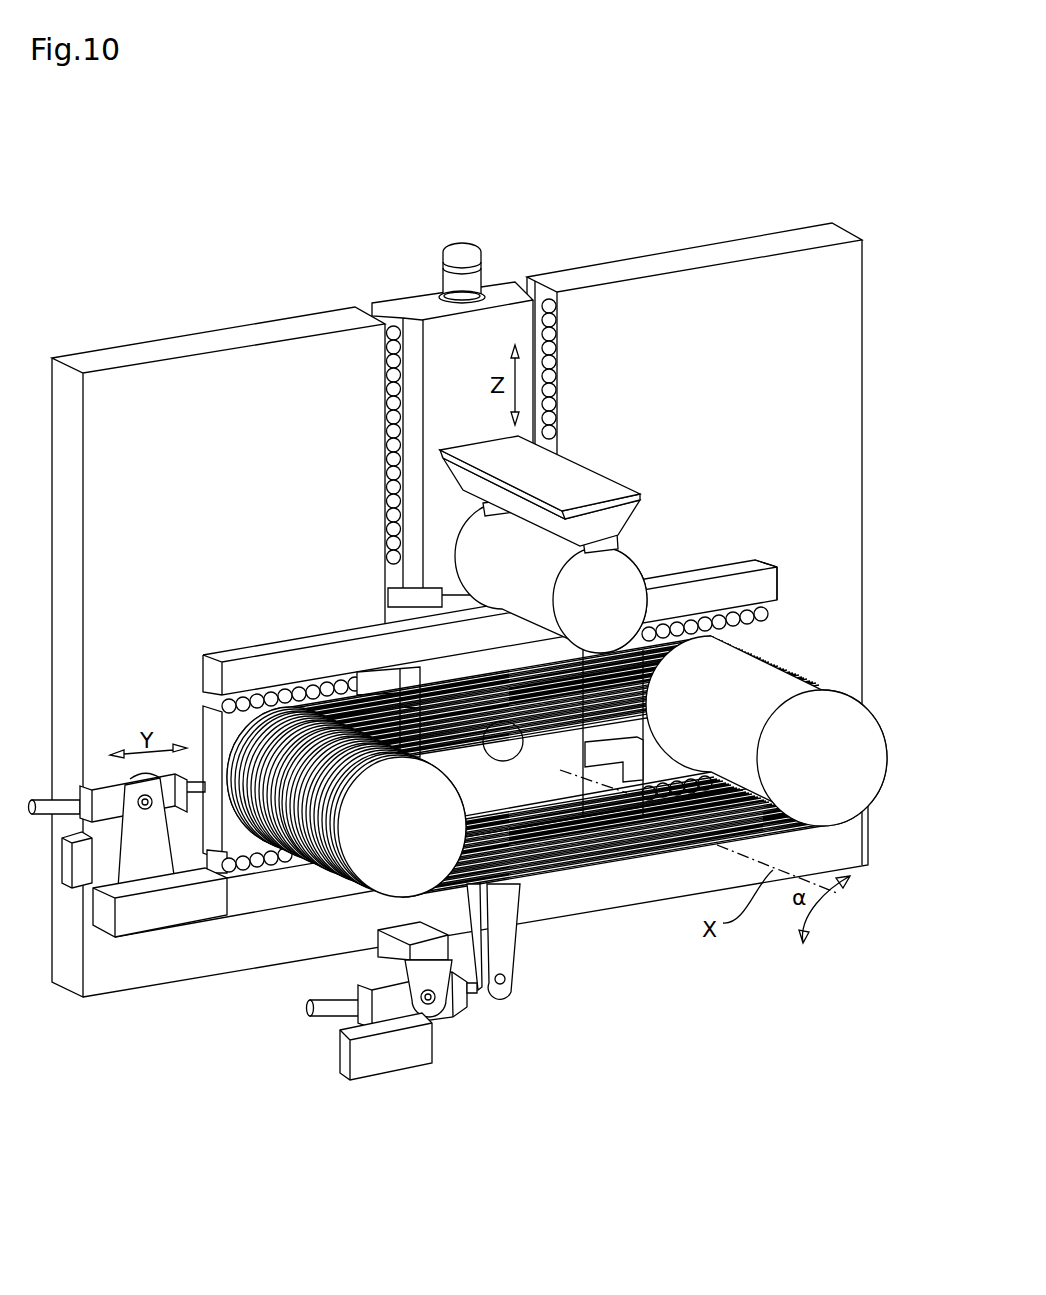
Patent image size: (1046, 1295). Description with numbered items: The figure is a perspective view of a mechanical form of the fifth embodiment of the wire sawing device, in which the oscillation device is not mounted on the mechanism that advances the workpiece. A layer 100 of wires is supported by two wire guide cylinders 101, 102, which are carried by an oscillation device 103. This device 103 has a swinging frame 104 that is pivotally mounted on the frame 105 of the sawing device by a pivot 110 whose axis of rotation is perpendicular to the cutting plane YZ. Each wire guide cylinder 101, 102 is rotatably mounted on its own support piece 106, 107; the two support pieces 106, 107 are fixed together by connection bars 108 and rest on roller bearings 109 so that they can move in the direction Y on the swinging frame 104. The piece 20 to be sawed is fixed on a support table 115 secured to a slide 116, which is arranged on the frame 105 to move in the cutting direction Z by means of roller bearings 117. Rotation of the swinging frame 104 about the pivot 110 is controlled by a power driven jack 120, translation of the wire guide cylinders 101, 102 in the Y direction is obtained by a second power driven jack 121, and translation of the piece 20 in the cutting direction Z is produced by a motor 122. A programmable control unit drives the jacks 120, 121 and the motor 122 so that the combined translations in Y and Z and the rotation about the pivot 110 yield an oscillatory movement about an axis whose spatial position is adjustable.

The piece to be sawed 20 is at (604, 584).
The layer of wires 100 is at (472, 690).
The wire guide cylinder 101 is at (817, 813).
The wire guide cylinder 102 is at (457, 787).
The oscillation device 103 is at (252, 643).
The swinging frame 104 is at (305, 665).
The frame of the sawing device 105 is at (694, 544).
The support piece 106 is at (762, 633).
The support piece 107 is at (212, 733).
The connection bars 108 is at (607, 750).
The roller bearings 109 is at (770, 565).
The pivot 110 is at (507, 763).
The support table 115 is at (597, 492).
The slide 116 is at (522, 338).
The roller bearings 117 is at (553, 388).
The power driven jack 120 is at (383, 1047).
The power driven jack 121 is at (100, 812).
The motor 122 is at (442, 272).